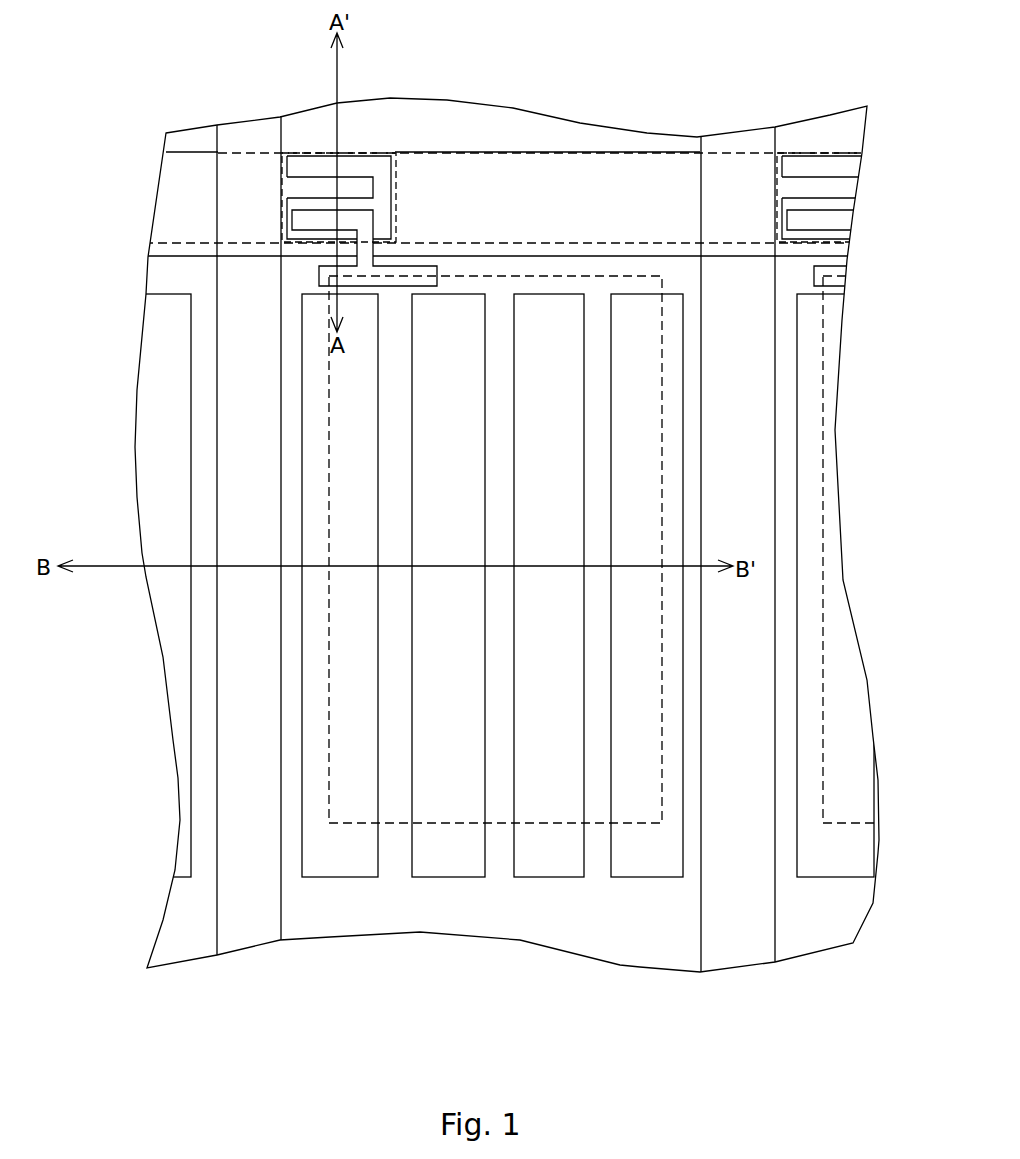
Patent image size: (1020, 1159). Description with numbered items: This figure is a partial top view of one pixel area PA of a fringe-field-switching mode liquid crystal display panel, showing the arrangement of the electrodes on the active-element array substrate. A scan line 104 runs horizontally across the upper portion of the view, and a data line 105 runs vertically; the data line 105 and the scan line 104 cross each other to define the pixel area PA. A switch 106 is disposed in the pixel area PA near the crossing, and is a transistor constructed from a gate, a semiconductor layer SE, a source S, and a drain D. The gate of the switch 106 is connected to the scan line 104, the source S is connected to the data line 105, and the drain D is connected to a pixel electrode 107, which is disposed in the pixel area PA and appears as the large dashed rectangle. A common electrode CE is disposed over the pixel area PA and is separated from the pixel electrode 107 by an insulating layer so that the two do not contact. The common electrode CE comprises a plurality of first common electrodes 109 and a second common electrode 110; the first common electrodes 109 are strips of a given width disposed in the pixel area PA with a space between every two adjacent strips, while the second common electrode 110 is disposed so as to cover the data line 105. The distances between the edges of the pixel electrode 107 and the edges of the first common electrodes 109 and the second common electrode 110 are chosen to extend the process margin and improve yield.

The scan line 104 is at (188, 207).
The data line 105 is at (233, 132).
The switch 106 is at (397, 176).
The pixel electrode 107 is at (662, 458).
The first common electrode 109 is at (593, 865).
The second common electrode 110 is at (207, 747).
The source S is at (302, 186).
The semiconductor layer SE is at (367, 167).
The drain D is at (348, 215).
The pixel area PA is at (480, 918).
The common electrode CE is at (690, 987).